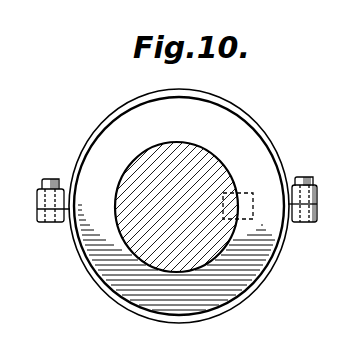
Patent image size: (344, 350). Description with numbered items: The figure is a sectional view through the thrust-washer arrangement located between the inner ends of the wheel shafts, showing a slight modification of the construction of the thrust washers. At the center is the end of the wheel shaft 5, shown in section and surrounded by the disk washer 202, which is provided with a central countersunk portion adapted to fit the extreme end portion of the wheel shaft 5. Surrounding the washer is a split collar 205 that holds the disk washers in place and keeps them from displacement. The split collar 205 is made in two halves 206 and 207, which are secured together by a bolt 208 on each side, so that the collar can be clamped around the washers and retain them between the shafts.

The wheel shaft 5 is at (214, 154).
The disk washer 202 is at (163, 200).
The split collar 205 is at (127, 105).
The half of split collar 206 is at (93, 133).
The half of split collar 207 is at (82, 263).
The bolt 208 is at (42, 178).